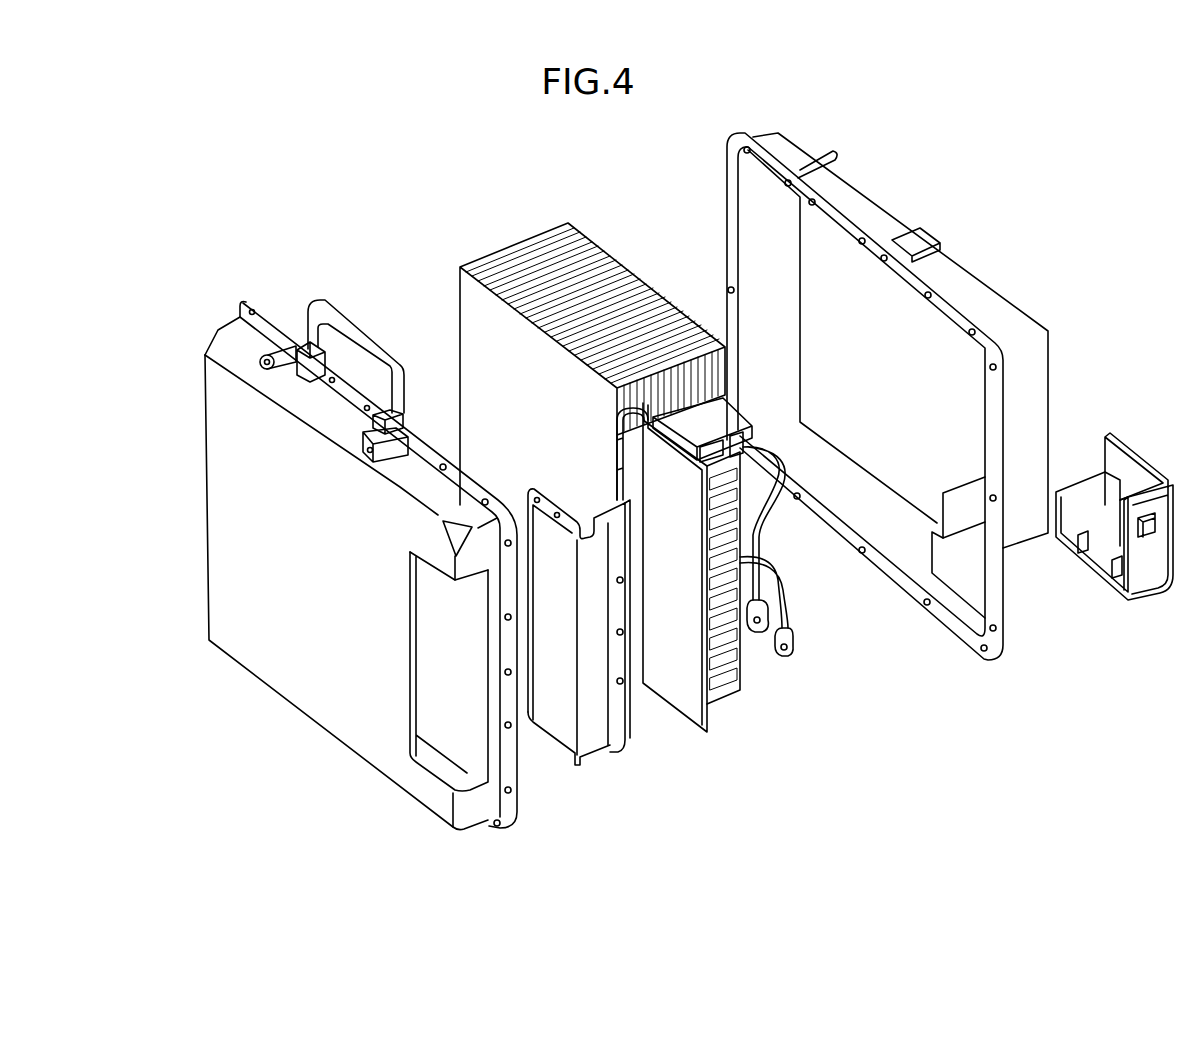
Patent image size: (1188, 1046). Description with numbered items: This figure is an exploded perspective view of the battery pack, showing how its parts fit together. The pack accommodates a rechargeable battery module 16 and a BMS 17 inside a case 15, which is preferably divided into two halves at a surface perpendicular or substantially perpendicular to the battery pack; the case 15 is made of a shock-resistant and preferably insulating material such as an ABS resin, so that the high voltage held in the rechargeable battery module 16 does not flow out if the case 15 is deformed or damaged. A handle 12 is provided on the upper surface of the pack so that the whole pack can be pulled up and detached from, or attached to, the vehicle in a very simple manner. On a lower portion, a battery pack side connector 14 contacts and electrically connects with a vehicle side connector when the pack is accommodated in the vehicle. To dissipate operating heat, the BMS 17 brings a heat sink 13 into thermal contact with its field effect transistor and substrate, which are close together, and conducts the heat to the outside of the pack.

The handle 12 is at (357, 338).
The heat sink 13 is at (590, 730).
The battery pack side connector 14 is at (1115, 590).
The case 15 is at (290, 672).
The rechargeable battery module 16 is at (548, 230).
The BMS 17 is at (683, 732).